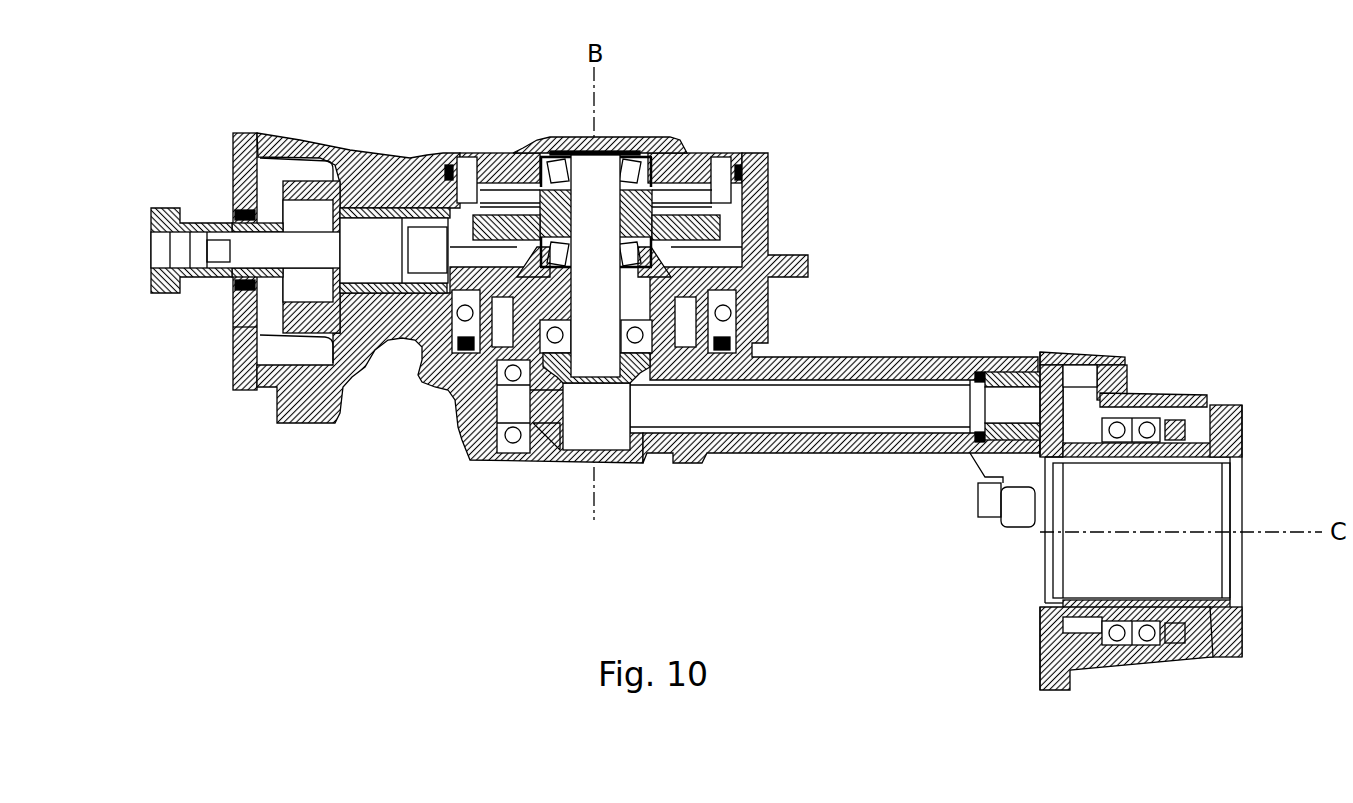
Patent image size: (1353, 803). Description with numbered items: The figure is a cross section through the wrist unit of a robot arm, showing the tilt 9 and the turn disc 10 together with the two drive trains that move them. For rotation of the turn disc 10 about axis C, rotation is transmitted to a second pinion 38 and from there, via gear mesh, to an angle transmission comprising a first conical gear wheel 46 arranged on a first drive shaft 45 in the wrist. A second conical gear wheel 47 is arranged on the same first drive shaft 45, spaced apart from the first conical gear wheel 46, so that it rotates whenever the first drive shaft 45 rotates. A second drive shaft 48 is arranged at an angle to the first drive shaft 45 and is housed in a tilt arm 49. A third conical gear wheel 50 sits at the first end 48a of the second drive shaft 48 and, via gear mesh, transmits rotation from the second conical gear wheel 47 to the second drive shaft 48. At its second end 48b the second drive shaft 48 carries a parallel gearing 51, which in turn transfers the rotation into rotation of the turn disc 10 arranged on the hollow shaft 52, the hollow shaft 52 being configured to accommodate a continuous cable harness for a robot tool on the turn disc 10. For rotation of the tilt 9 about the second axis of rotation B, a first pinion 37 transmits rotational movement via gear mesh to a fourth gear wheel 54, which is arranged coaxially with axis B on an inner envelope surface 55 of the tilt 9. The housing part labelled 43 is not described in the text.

The tilt 9 is at (930, 530).
The turn disc 10 is at (1233, 630).
The first pinion 37 is at (151, 216).
The second pinion 38 is at (286, 257).
The gear housing 43 is at (786, 99).
The first drive shaft 45 is at (610, 137).
The first conical gear wheel 46 is at (742, 223).
The second conical gear wheel 47 is at (613, 367).
The second drive shaft 48 is at (853, 407).
The first end of the second drive shaft 48a is at (507, 407).
The second end of the second drive shaft 48b is at (1070, 340).
The tilt arm 49 is at (760, 437).
The third conical gear wheel 50 is at (557, 447).
The parallel gearing 51 is at (1080, 437).
The hollow shaft 52 is at (1060, 647).
The fourth gear wheel 54 is at (745, 289).
The inner envelope surface 55 is at (757, 322).